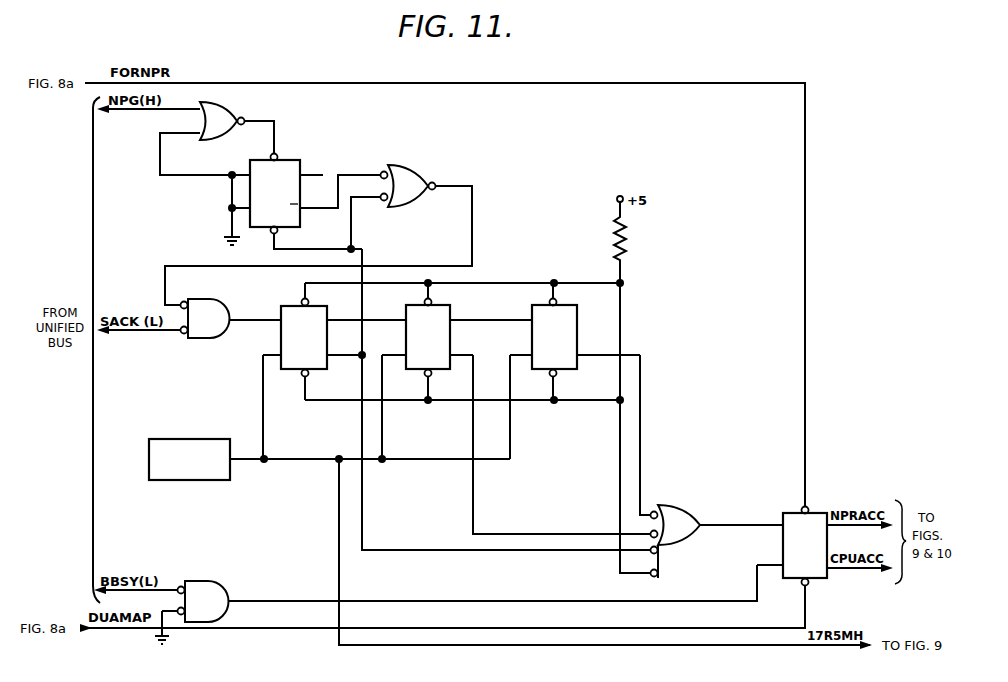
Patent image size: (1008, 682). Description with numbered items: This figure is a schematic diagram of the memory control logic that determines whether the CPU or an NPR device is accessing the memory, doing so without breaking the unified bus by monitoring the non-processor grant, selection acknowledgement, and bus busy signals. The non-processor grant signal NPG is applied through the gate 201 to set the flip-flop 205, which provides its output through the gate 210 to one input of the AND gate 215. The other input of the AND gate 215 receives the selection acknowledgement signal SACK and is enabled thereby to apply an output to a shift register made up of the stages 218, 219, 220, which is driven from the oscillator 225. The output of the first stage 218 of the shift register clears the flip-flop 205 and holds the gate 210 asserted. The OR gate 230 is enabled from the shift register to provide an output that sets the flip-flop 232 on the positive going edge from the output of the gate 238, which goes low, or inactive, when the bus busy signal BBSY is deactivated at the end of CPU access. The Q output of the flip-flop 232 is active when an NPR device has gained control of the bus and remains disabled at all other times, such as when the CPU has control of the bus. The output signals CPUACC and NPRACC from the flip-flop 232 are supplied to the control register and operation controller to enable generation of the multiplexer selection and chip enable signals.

The gate 201 is at (232, 104).
The flip-flop 205 is at (298, 160).
The gate 210 is at (414, 176).
The AND gate 215 is at (200, 338).
The first stage of the shift register 218 is at (279, 308).
The stage of the shift register 219 is at (452, 307).
The stage of the shift register 220 is at (578, 318).
The oscillator 225 is at (200, 481).
The OR gate 230 is at (677, 507).
The flip-flop 232 is at (783, 547).
The gate 238 is at (222, 580).